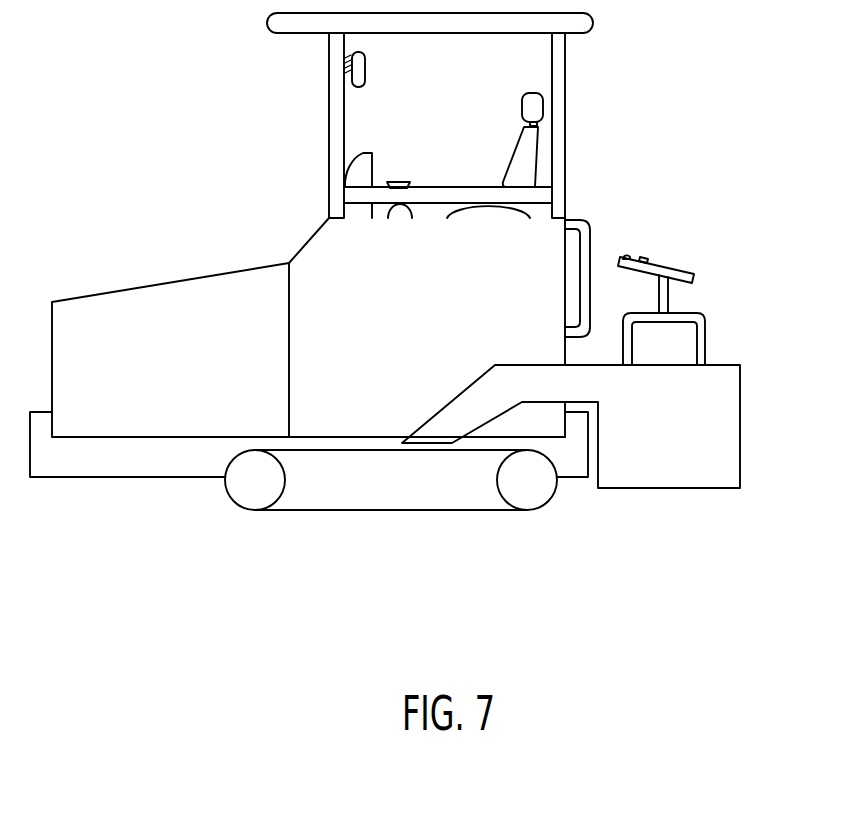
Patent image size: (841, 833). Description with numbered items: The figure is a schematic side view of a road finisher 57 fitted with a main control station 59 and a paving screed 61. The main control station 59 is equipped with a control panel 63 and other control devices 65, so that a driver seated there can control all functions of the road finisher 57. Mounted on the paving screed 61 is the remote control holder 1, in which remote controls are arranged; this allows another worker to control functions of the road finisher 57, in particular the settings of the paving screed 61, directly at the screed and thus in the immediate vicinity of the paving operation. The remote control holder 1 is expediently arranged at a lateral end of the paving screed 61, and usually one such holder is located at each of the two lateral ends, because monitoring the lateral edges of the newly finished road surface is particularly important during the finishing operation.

The remote control holder 1 is at (679, 266).
The road finisher 57 is at (182, 158).
The main control station 59 is at (458, 113).
The paving screed 61 is at (685, 442).
The control panel 63 is at (373, 158).
The control devices 65 is at (407, 179).